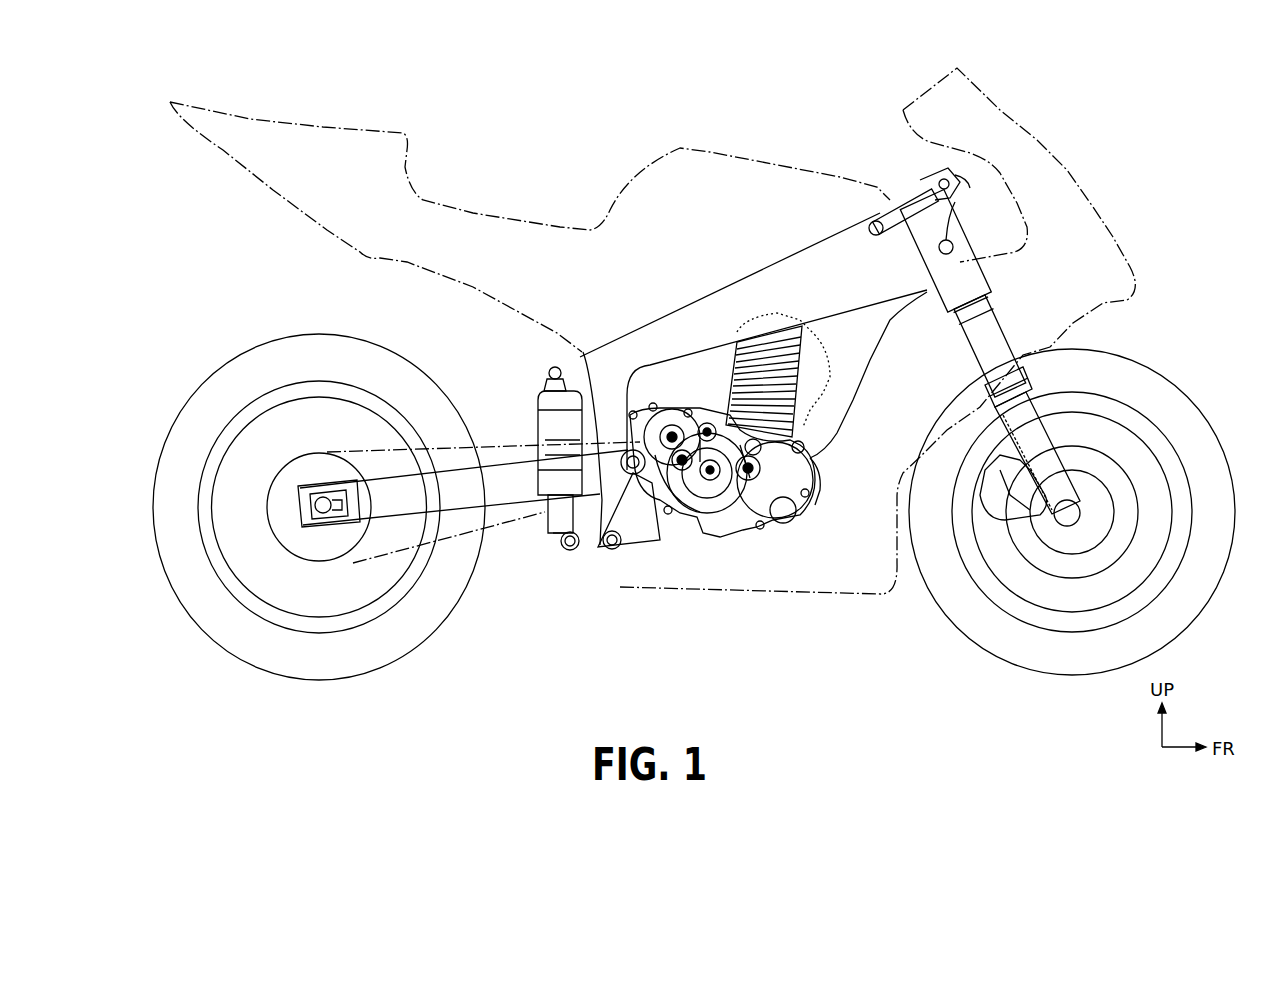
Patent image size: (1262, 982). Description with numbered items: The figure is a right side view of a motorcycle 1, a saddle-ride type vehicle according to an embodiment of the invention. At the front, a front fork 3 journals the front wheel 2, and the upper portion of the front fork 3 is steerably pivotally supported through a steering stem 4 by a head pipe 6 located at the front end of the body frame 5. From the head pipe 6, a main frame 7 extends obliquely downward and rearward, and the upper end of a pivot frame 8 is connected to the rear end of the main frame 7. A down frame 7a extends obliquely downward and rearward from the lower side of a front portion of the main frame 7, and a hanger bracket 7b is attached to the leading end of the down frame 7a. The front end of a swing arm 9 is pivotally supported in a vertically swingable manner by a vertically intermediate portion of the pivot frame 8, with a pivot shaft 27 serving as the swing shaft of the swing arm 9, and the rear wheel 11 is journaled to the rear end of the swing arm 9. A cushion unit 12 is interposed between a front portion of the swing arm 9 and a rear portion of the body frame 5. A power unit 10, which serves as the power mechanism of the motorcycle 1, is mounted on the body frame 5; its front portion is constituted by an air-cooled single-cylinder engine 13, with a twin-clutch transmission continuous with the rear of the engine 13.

The motorcycle 1 is at (813, 103).
The front wheel 2 is at (1180, 405).
The front fork 3 is at (1045, 445).
The steering stem 4 is at (985, 276).
The body frame 5 is at (778, 257).
The head pipe 6 is at (935, 240).
The main frame 7 is at (757, 280).
The down frame 7a is at (838, 380).
The hanger bracket 7b is at (822, 476).
The pivot frame 8 is at (643, 545).
The swing arm 9 is at (472, 505).
The power unit 10 is at (760, 453).
The rear wheel 11 is at (243, 363).
The cushion unit 12 is at (553, 420).
The engine 13 is at (804, 532).
The pivot shaft 27 is at (630, 474).